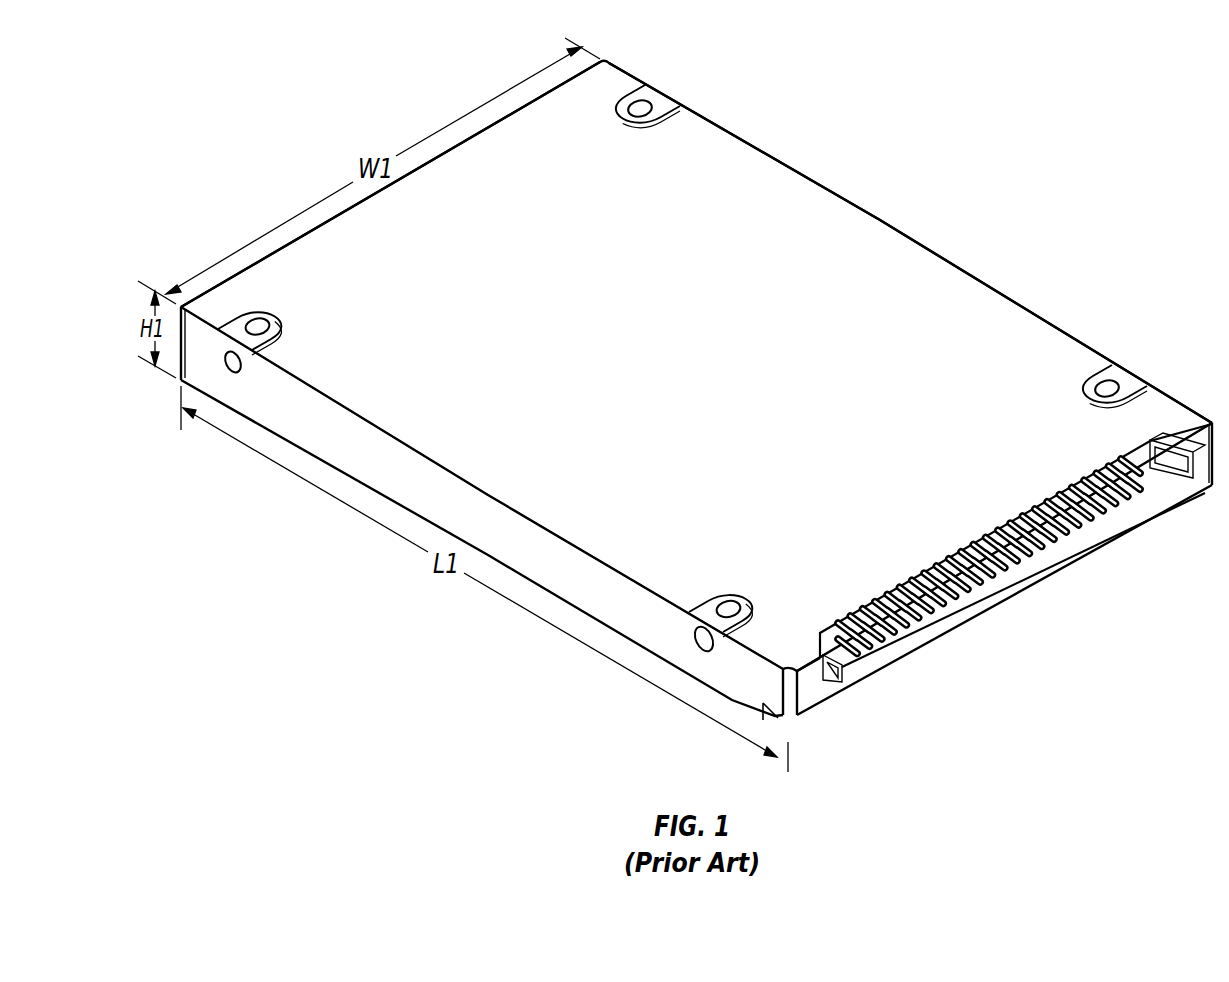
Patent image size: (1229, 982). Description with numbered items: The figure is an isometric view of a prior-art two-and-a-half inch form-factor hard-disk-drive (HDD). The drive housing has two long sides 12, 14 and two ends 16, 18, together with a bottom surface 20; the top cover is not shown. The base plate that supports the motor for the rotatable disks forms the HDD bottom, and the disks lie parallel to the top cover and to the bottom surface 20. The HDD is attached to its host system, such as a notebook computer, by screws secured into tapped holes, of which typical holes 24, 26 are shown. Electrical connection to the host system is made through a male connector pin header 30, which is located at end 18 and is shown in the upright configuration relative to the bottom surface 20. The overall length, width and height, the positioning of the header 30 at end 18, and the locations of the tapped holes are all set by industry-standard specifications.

The side 12 is at (575, 580).
The side 14 is at (824, 185).
The end 16 is at (291, 241).
The end 18 is at (810, 688).
The bottom surface 20 is at (1000, 319).
The tapped hole 24 is at (228, 366).
The tapped hole 26 is at (262, 324).
The male connector pin header 30 is at (853, 663).